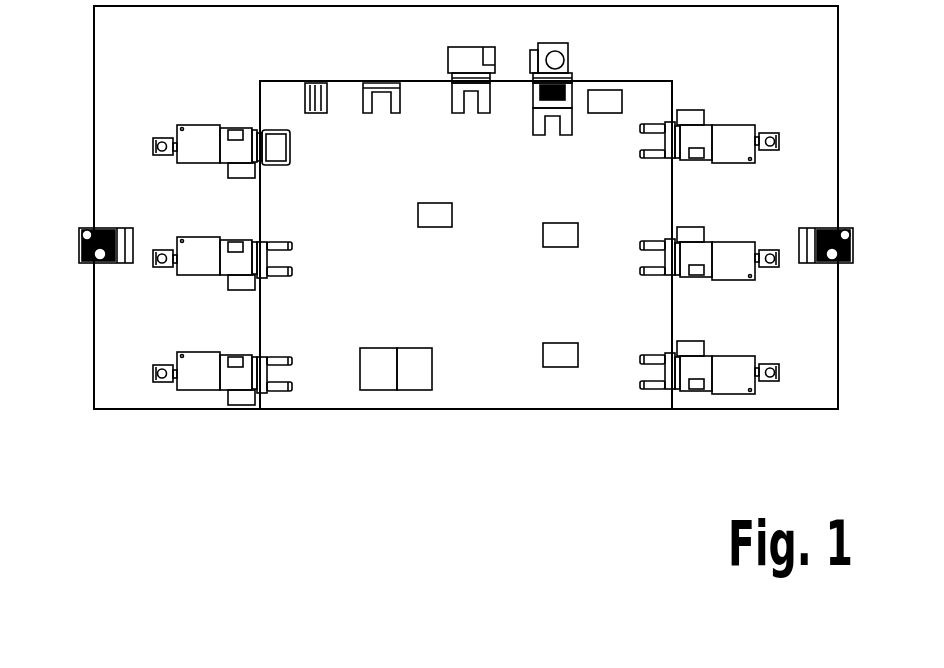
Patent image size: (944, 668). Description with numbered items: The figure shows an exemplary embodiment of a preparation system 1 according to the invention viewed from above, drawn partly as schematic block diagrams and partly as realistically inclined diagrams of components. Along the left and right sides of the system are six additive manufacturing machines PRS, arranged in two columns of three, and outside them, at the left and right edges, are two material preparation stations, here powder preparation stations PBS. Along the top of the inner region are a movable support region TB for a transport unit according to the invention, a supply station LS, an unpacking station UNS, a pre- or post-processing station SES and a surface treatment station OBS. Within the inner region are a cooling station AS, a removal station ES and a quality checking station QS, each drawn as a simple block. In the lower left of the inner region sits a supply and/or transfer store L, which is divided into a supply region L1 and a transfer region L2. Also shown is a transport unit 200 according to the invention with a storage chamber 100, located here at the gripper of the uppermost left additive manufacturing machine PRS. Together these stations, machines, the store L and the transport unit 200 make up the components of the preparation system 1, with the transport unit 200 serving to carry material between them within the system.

The preparation system 1 is at (287, 430).
The additive manufacturing machine PRS is at (469, 240).
The powder preparation station PBS is at (80, 263).
The unpacking station UNS is at (473, 61).
The pre- or post-processing station SES is at (557, 52).
The movable support region TB is at (328, 97).
The supply station LS is at (400, 98).
The surface treatment station OBS is at (603, 113).
The cooling station AS is at (435, 227).
The removal station ES is at (560, 247).
The quality checking station QS is at (543, 354).
The supply and/or transfer store L is at (413, 339).
The supply region L1 is at (378, 369).
The transfer region L2 is at (414, 369).
The storage chamber 100 is at (339, 178).
The transport unit 200 is at (295, 168).